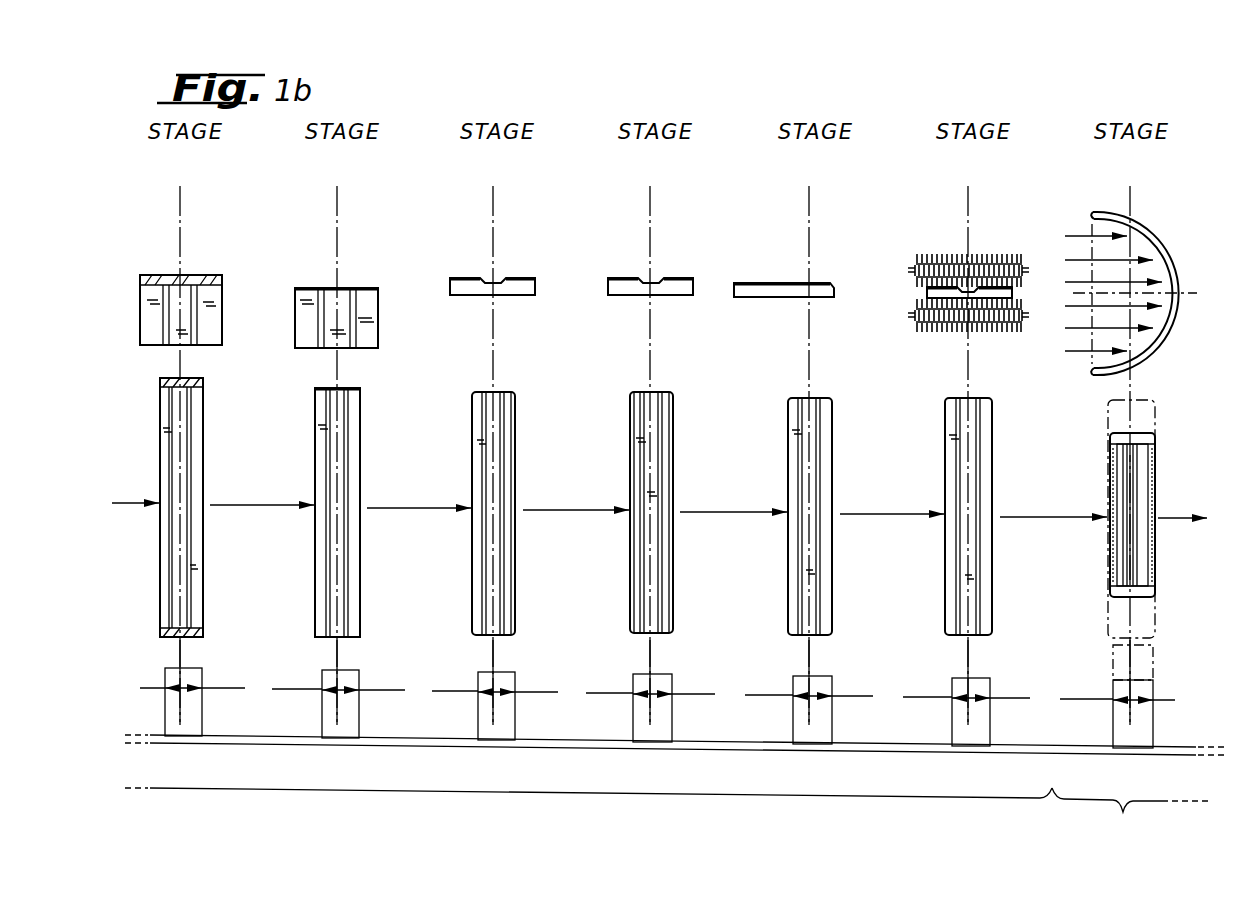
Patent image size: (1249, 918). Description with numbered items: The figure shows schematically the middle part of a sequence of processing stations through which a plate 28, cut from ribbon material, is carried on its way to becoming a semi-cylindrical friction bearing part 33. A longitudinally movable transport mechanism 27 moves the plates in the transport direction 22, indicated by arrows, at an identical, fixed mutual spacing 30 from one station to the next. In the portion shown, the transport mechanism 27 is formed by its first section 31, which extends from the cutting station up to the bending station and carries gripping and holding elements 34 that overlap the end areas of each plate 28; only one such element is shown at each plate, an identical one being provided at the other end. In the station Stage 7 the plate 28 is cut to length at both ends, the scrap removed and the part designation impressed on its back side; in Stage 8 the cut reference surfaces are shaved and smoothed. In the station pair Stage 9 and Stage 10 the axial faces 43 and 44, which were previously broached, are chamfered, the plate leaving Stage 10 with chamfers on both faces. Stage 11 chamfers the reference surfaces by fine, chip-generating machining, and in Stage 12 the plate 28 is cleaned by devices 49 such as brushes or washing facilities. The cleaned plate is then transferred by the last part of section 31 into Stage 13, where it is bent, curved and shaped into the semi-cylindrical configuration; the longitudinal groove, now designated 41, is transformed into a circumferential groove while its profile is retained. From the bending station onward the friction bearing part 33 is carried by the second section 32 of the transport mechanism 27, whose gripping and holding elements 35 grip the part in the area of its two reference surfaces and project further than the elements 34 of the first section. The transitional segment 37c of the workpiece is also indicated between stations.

The Stage 7 is at (178, 440).
The Stage 8 is at (335, 440).
The Stage 9 is at (491, 440).
The Stage 10 is at (649, 440).
The Stage 11 is at (808, 440).
The Stage 12 is at (967, 440).
The Stage 13 is at (1129, 440).
The transport direction 22 is at (659, 499).
The transport mechanism 27 is at (627, 751).
The plate 28 is at (206, 343).
The mutual spacing 30 is at (657, 695).
The first section of transport mechanism 31 is at (588, 813).
The second section of transport mechanism 32 is at (1132, 815).
The friction bearing part 33 is at (1182, 270).
The gripping and holding element 34 is at (1173, 728).
The gripping and holding element 35 is at (1147, 667).
The tube segment 37c is at (190, 308).
The groove 41 is at (1136, 550).
The axial face 43 is at (524, 418).
The axial face 44 is at (626, 407).
The cleaning devices 49 is at (985, 256).